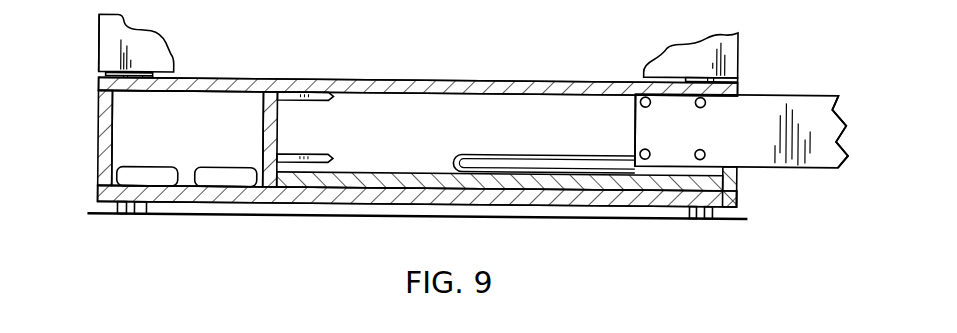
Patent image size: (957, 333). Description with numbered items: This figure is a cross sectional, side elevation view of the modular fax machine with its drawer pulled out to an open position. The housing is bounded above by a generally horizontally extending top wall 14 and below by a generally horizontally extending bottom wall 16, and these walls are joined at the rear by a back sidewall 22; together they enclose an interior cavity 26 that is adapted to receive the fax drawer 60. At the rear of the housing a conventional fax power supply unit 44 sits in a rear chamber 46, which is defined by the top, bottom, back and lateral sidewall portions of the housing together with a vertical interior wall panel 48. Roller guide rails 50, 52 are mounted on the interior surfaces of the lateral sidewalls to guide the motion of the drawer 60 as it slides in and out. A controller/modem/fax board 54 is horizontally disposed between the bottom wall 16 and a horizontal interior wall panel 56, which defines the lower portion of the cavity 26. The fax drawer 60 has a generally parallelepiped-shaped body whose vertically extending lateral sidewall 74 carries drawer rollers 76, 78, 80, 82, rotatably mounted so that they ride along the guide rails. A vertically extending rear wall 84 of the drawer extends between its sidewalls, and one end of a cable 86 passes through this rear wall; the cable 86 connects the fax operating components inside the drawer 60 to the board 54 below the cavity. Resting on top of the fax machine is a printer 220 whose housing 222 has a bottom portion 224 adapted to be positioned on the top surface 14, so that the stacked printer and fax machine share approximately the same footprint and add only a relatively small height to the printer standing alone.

The top wall 14 is at (373, 83).
The bottom wall 16 is at (415, 208).
The back sidewall 22 is at (98, 153).
The interior cavity 26 is at (415, 102).
The fax power supply unit 44 is at (213, 180).
The rear chamber 46 is at (187, 117).
The vertical interior wall panel 48 is at (283, 80).
The roller guide rail 50 is at (330, 83).
The roller guide rail 52 is at (288, 160).
The controller/modem/fax board 54 is at (545, 193).
The horizontal interior wall panel 56 is at (413, 173).
The fax drawer 60 is at (793, 92).
The lateral sidewall 74 is at (825, 137).
The drawer roller 76 is at (637, 100).
The drawer roller 78 is at (707, 103).
The drawer roller 80 is at (645, 160).
The drawer roller 82 is at (700, 160).
The rear wall 84 is at (637, 125).
The cable 86 is at (567, 155).
The printer 220 is at (168, 31).
The housing 222 is at (98, 58).
The bottom portion 224 is at (98, 76).